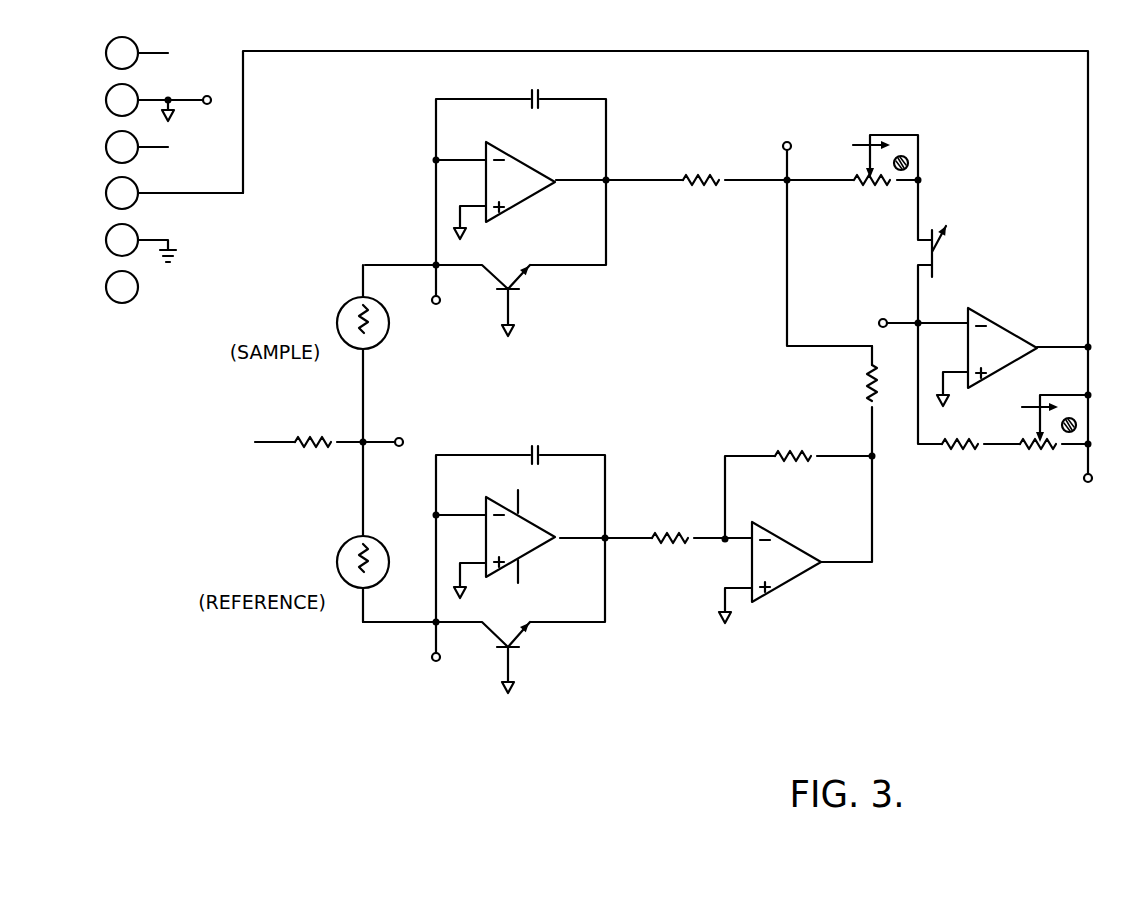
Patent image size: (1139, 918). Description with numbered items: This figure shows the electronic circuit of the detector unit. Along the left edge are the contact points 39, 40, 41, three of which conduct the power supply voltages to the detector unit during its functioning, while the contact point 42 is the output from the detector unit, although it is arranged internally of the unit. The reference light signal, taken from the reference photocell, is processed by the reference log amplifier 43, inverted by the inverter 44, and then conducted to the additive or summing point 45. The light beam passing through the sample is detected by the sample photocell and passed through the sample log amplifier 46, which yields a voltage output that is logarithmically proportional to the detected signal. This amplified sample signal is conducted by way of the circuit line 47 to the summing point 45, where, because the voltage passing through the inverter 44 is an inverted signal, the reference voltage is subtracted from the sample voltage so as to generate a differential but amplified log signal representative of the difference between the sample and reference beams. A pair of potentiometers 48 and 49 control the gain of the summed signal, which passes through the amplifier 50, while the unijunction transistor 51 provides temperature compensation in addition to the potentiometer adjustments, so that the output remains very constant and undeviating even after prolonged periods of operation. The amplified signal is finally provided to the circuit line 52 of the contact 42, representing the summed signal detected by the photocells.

The contact point 39 is at (104, 57).
The contact point 40 is at (104, 104).
The contact point 41 is at (106, 146).
The contact point 42 is at (106, 193).
The reference log amplifier 43 is at (605, 455).
The inverter 44 is at (783, 585).
The summing point 45 is at (793, 176).
The sample log amplifier 46 is at (609, 266).
The circuit line 47 is at (637, 180).
The potentiometer 48 is at (920, 161).
The potentiometer 49 is at (1061, 448).
The amplifier 50 is at (983, 356).
The unijunction transistor 51 is at (935, 258).
The circuit line 52 is at (711, 51).